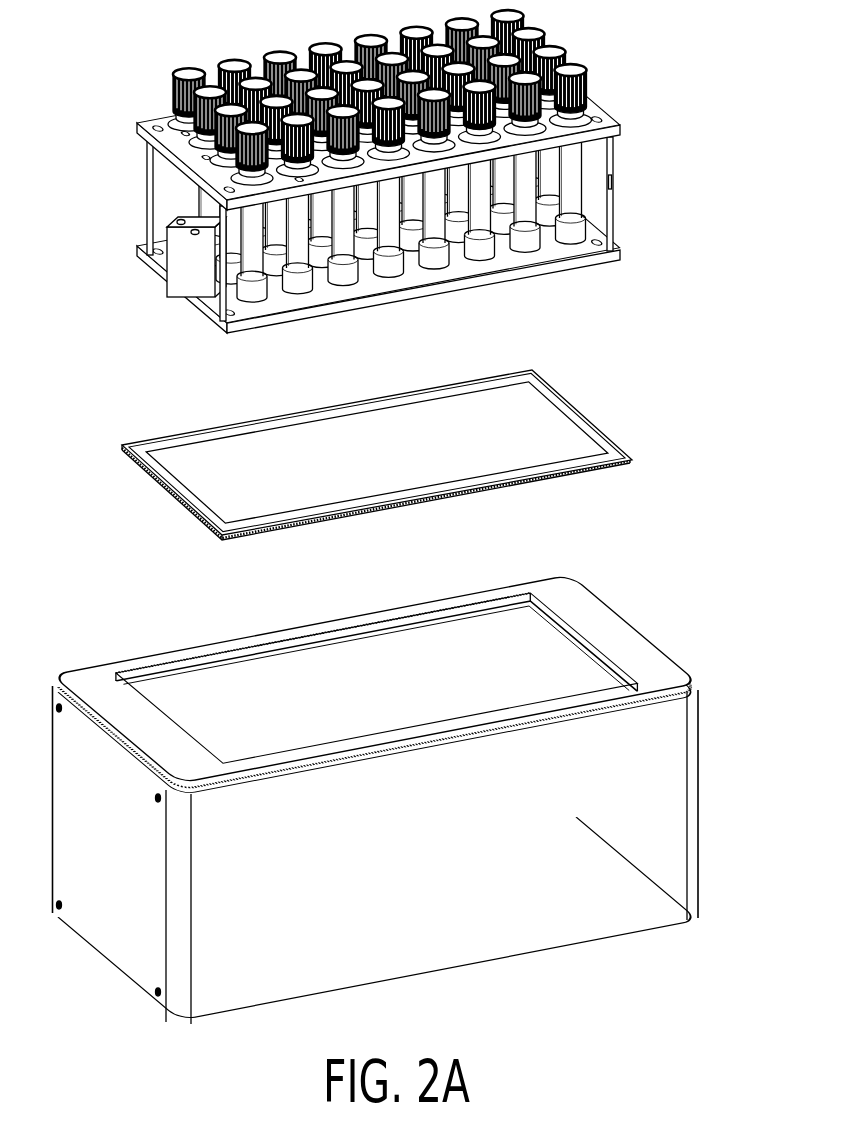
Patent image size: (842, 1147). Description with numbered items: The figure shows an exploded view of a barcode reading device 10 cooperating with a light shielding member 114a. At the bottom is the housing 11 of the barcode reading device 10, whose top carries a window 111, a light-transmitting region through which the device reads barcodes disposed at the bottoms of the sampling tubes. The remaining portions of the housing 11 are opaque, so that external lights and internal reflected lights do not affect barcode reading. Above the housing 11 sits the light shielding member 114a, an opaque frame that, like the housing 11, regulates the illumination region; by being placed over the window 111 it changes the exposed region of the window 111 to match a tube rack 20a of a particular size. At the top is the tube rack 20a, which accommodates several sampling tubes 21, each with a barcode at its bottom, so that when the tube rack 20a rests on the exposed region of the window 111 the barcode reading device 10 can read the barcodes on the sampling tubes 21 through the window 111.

The tube rack 20a is at (434, 171).
The sampling tube 21 is at (573, 178).
The light shielding member 114a is at (583, 412).
The barcode reading device 10 is at (412, 770).
The window 111 is at (233, 678).
The housing 11 is at (698, 805).